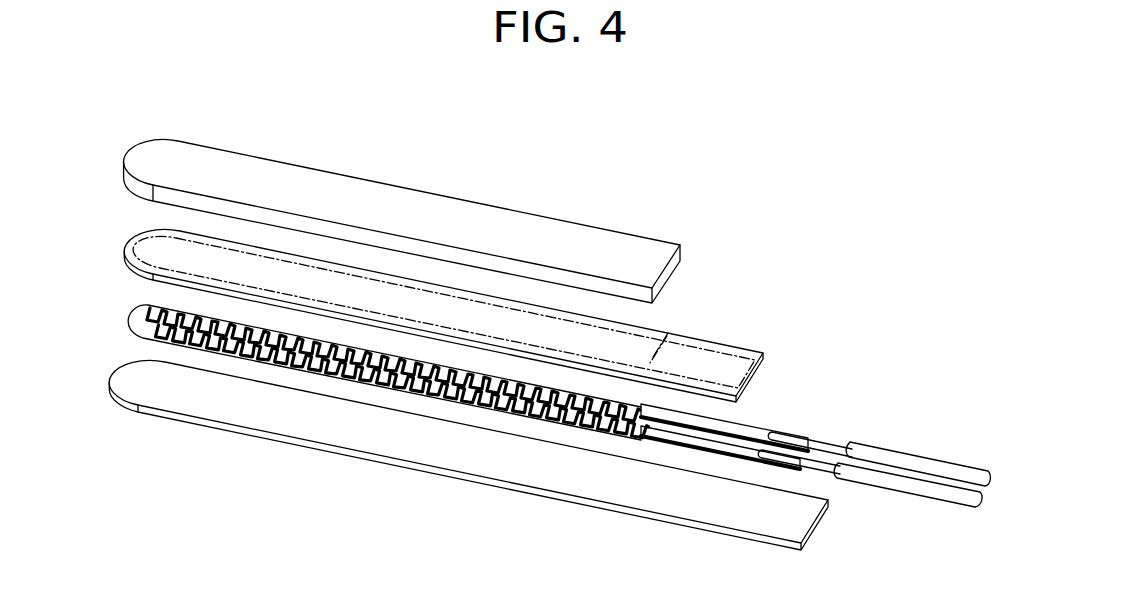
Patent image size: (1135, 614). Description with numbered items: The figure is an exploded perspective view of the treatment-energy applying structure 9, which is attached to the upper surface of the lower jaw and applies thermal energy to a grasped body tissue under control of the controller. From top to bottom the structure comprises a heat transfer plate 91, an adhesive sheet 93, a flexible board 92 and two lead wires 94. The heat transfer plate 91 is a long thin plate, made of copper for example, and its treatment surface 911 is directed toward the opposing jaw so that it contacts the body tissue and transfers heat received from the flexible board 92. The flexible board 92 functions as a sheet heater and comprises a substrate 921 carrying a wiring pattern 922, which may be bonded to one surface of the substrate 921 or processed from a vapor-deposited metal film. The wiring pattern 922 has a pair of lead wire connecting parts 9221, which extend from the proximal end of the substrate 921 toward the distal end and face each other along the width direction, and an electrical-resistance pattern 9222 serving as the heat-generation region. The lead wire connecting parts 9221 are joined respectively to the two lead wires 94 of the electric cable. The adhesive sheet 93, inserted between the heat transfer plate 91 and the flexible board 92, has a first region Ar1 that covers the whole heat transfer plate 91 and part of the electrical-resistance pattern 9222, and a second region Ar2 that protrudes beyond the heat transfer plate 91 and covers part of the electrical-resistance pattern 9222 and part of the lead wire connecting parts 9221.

The treatment-energy applying structure 9 is at (652, 150).
The heat transfer plate 91 is at (627, 252).
The treatment surface 911 is at (403, 203).
The flexible board 92 is at (954, 367).
The substrate 921 is at (803, 517).
The wiring pattern 922 is at (886, 358).
The lead wire connecting parts 9221 is at (753, 456).
The electrical-resistance pattern 9222 is at (765, 362).
The adhesive sheet 93 is at (647, 343).
The lead wires 94 is at (913, 487).
The first region Ar1 is at (149, 229).
The second region Ar2 is at (757, 369).